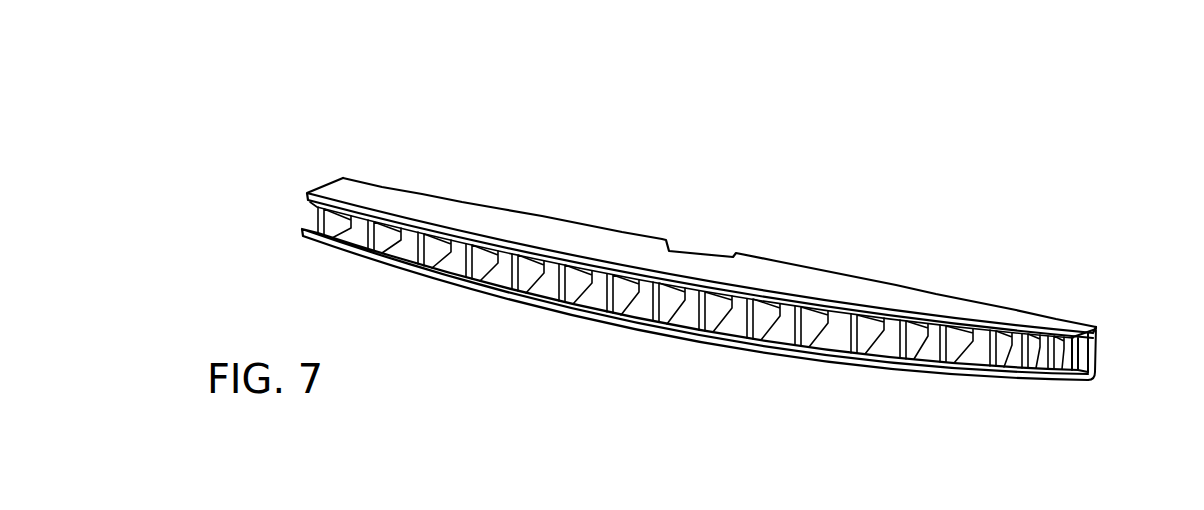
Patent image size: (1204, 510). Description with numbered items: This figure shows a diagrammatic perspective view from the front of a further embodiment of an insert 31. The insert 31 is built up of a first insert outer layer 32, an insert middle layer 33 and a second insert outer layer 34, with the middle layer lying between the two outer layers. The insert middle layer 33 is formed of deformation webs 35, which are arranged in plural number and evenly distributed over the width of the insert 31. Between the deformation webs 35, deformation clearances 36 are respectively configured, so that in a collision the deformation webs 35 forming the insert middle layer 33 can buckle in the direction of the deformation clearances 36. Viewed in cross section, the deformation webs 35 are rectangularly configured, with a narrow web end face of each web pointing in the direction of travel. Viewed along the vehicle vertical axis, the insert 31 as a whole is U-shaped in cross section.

The insert 31 is at (508, 154).
The first insert outer layer 32 is at (1095, 380).
The insert middle layer 33 is at (1082, 353).
The second insert outer layer 34 is at (1098, 330).
The deformation webs 35 is at (625, 294).
The deformation clearances 36 is at (688, 316).